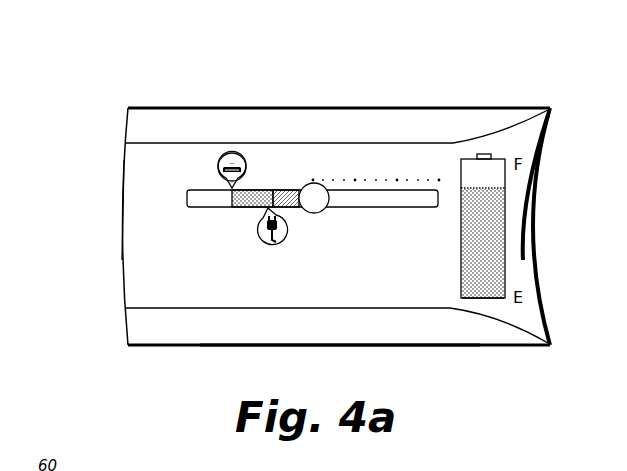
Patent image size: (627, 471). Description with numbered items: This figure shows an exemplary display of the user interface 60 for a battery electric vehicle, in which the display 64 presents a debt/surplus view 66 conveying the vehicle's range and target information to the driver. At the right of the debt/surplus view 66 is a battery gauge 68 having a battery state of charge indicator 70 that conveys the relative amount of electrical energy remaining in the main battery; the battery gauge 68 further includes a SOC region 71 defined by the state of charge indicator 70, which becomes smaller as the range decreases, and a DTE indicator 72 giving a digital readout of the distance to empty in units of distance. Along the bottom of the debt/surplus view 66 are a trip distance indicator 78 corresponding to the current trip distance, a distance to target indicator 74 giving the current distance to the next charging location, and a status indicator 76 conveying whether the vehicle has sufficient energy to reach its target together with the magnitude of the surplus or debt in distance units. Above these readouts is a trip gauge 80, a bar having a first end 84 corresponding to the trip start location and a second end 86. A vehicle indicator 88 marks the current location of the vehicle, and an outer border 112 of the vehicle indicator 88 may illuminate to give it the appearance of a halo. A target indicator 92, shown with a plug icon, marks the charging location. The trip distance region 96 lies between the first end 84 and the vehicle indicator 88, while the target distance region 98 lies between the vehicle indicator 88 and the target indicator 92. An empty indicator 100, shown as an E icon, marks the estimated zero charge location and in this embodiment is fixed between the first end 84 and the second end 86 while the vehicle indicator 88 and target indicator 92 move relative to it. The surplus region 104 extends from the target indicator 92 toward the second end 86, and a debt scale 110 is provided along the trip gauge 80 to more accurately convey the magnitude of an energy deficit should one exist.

The user interface 60 is at (122, 60).
The display 64 is at (124, 318).
The debt/surplus view 66 is at (145, 240).
The battery gauge 68 is at (550, 118).
The battery state of charge indicator 70 is at (504, 188).
The SOC region 71 is at (483, 298).
The DTE indicator 72 is at (505, 238).
The distance to target indicator 74 is at (305, 319).
The status indicator 76 is at (410, 319).
The trip distance indicator 78 is at (214, 319).
The trip gauge 80 is at (138, 193).
The first end 84 is at (187, 197).
The second end 86 is at (490, 159).
The vehicle indicator 88 is at (232, 153).
The target indicator 92 is at (257, 232).
The trip distance region 96 is at (202, 190).
The target distance region 98 is at (255, 190).
The empty indicator 100 is at (314, 213).
The surplus region 104 is at (288, 190).
The debt scale 110 is at (405, 150).
The outer border 112 is at (218, 168).